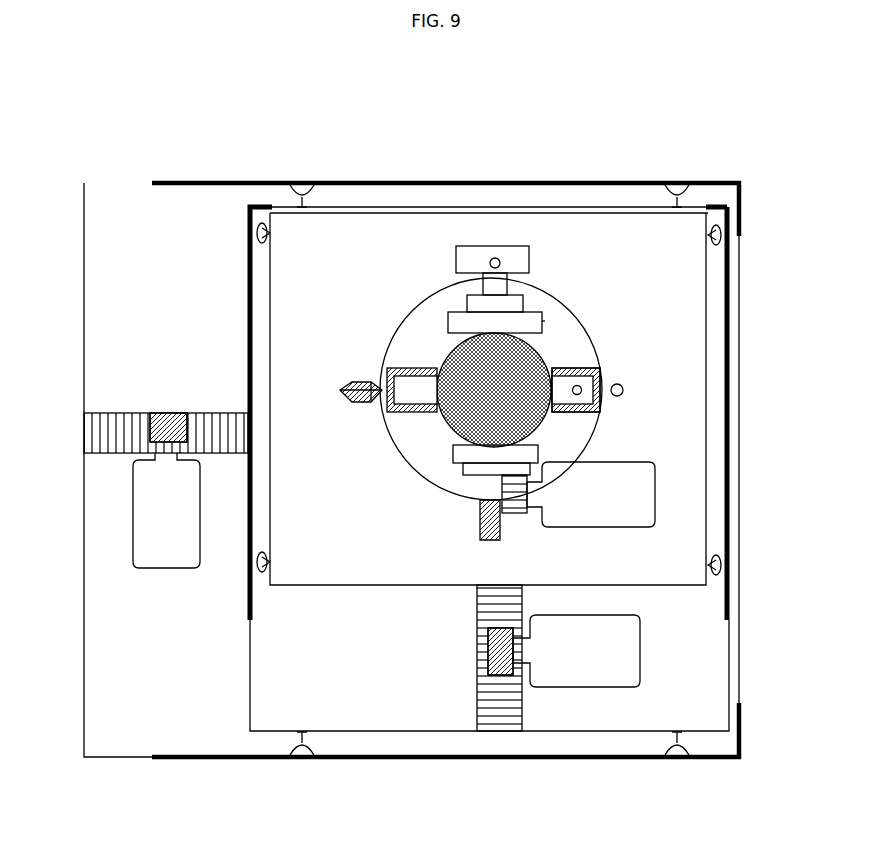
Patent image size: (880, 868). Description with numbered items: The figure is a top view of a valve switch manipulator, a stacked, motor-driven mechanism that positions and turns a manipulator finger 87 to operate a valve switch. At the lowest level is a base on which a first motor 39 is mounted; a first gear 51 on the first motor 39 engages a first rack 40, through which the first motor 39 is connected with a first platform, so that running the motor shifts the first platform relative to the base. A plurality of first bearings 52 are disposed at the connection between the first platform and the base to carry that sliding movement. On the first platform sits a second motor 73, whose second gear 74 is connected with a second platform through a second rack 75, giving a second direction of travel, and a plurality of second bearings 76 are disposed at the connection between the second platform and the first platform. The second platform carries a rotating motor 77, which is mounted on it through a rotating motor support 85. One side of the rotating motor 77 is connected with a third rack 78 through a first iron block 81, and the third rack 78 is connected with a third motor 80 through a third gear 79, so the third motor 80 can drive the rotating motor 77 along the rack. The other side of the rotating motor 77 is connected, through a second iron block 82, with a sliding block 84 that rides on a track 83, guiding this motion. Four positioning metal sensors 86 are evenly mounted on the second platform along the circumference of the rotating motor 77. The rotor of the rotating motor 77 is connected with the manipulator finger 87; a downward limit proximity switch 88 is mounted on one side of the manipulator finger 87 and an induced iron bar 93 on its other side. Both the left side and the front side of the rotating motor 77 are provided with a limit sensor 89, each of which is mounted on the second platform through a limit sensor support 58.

The first motor 39 is at (130, 494).
The first rack 40 is at (103, 428).
The first gear 51 is at (152, 453).
The first bearings 52 is at (296, 186).
The limit sensor support 58 is at (355, 382).
The second motor 73 is at (572, 690).
The second gear 74 is at (497, 680).
The second rack 75 is at (480, 700).
The second bearings 76 is at (257, 224).
The rotating motor 77 is at (596, 351).
The third rack 78 is at (528, 478).
The third gear 79 is at (500, 514).
The third motor 80 is at (655, 505).
The first iron block 81 is at (538, 455).
The second iron block 82 is at (545, 321).
The track 83 is at (523, 300).
The sliding block 84 is at (542, 322).
The rotating motor support 85 is at (530, 248).
The positioning metal sensors 86 is at (360, 382).
The manipulator finger 87 is at (600, 378).
The downward limit proximity switch 88 is at (582, 391).
The limit sensor 89 is at (347, 383).
The induced iron bar 93 is at (381, 392).